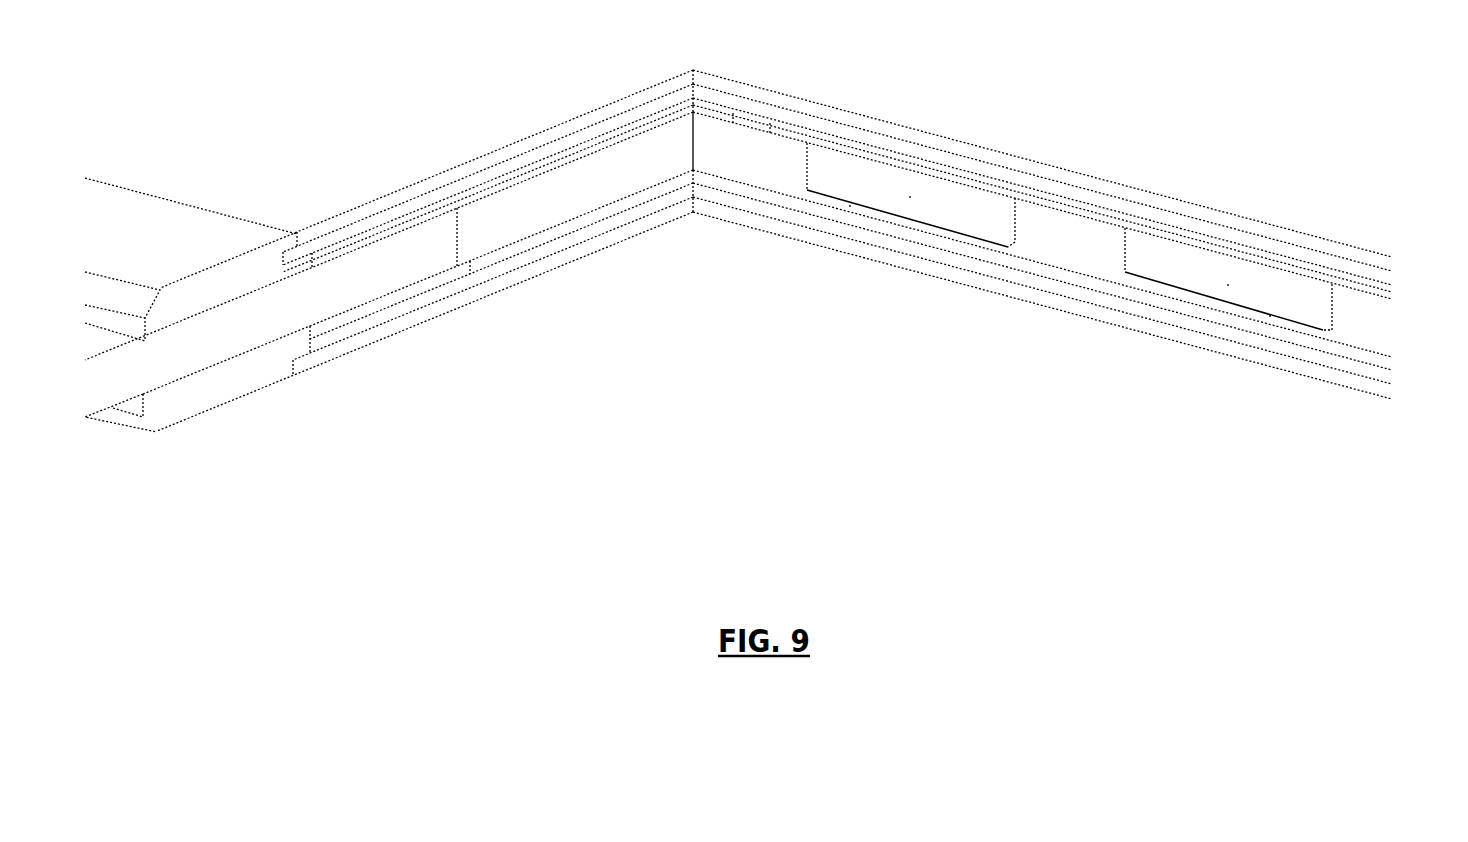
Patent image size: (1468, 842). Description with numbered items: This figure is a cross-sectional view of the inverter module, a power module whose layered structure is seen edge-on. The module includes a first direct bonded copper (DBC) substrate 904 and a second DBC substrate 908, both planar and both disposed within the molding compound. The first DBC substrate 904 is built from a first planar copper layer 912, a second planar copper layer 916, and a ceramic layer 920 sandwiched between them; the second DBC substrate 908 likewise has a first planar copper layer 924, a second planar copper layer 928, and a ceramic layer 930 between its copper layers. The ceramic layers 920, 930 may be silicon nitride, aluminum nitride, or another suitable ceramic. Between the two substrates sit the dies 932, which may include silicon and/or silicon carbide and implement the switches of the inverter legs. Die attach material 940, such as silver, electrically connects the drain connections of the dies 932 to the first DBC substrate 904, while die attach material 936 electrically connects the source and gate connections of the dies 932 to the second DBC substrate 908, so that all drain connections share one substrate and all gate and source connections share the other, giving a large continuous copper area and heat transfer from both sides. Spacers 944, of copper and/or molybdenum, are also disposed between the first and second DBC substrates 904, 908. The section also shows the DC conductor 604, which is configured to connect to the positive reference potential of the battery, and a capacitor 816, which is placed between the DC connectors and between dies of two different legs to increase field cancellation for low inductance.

The DC conductor 604 is at (168, 352).
The capacitor 816 is at (675, 140).
The first direct bonded copper (DBC) substrate 904 is at (1073, 188).
The second direct bonded copper (DBC) substrate 908 is at (1073, 343).
The first planar copper layer 912 is at (1334, 247).
The ceramic layer 920 is at (1352, 270).
The second planar copper layer 916 is at (1372, 293).
The first planar copper layer 924 is at (1368, 387).
The ceramic layer 930 is at (1352, 367).
The second planar copper layer 928 is at (1335, 348).
The die attach material 940 is at (1210, 252).
The die 932 is at (1272, 317).
The die attach material 936 is at (1307, 333).
The spacer 944 is at (1230, 286).